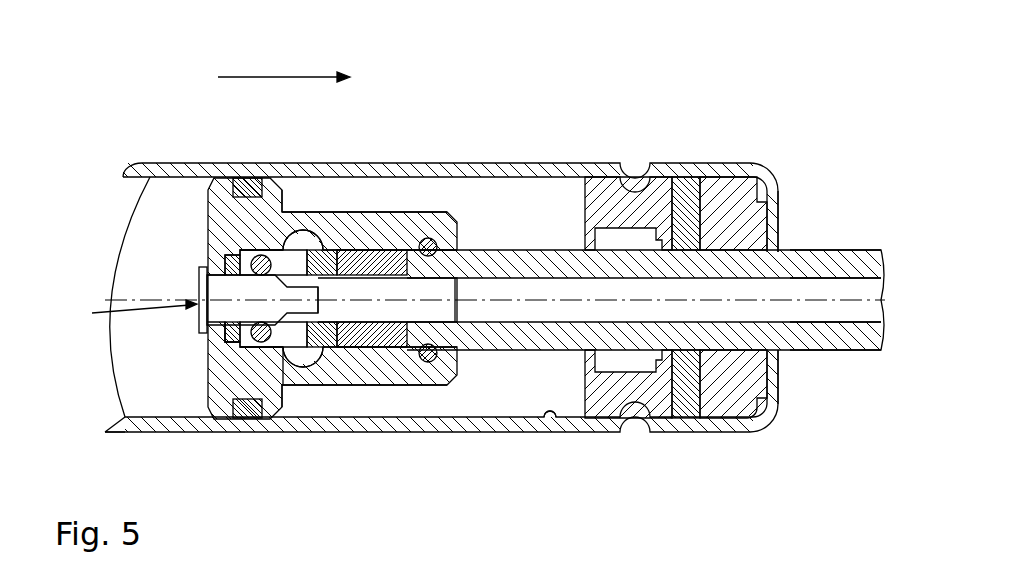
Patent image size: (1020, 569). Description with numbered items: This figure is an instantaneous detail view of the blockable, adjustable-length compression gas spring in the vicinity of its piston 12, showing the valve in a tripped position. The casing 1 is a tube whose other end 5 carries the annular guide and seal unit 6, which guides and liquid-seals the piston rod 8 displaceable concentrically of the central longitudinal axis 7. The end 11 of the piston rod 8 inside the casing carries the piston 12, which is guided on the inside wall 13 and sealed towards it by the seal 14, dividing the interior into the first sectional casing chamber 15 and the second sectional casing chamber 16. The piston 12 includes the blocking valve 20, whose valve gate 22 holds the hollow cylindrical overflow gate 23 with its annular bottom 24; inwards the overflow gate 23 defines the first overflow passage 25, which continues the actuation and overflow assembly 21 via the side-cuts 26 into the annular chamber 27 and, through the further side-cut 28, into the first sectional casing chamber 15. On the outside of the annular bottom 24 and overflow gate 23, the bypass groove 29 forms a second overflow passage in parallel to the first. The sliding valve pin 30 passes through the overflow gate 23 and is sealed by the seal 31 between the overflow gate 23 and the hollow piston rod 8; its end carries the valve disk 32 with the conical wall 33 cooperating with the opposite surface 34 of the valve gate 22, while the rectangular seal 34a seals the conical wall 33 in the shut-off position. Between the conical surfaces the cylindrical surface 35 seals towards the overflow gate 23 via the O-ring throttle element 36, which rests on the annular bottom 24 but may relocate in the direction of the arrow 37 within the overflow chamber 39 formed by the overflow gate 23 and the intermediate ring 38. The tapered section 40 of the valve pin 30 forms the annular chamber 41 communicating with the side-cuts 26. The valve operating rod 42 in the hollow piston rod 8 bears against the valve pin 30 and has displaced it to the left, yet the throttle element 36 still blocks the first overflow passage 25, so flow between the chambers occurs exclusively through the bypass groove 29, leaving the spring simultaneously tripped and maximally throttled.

The casing 1 is at (125, 432).
The other end of the casing 5 is at (783, 420).
The guide and seal unit 6 is at (740, 402).
The central longitudinal axis 7 is at (652, 297).
The piston rod 8 is at (835, 257).
The end of the piston rod 11 is at (567, 257).
The piston 12 is at (215, 400).
The inside wall 13 is at (550, 419).
The seal 14 is at (245, 402).
The first sectional casing chamber 15 is at (535, 197).
The second sectional casing chamber 16 is at (160, 195).
The blocking valve 20 is at (125, 313).
The actuation and overflow assembly 21 is at (205, 183).
The valve gate 22 is at (447, 216).
The overflow gate 23 is at (290, 395).
The annular bottom 24 is at (230, 325).
The first overflow passage 25 is at (285, 222).
The side-cuts 26 is at (330, 240).
The annular chamber 27 is at (303, 214).
The side-cut 28 is at (340, 380).
The bypass groove 29 is at (237, 190).
The valve pin 30 is at (447, 310).
The seal 31 is at (413, 347).
The valve disk 32 is at (200, 278).
The conical wall 33 is at (203, 262).
The opposite surface 34 is at (205, 250).
The seal 34a is at (210, 318).
The cylindrical surface 35 is at (300, 380).
The throttle element 36 is at (287, 357).
The arrow 37 is at (286, 77).
The intermediate ring 38 is at (425, 238).
The overflow chamber 39 is at (261, 298).
The tapered section 40 is at (368, 373).
The annular chamber 41 is at (355, 250).
The valve operating rod 42 is at (795, 280).